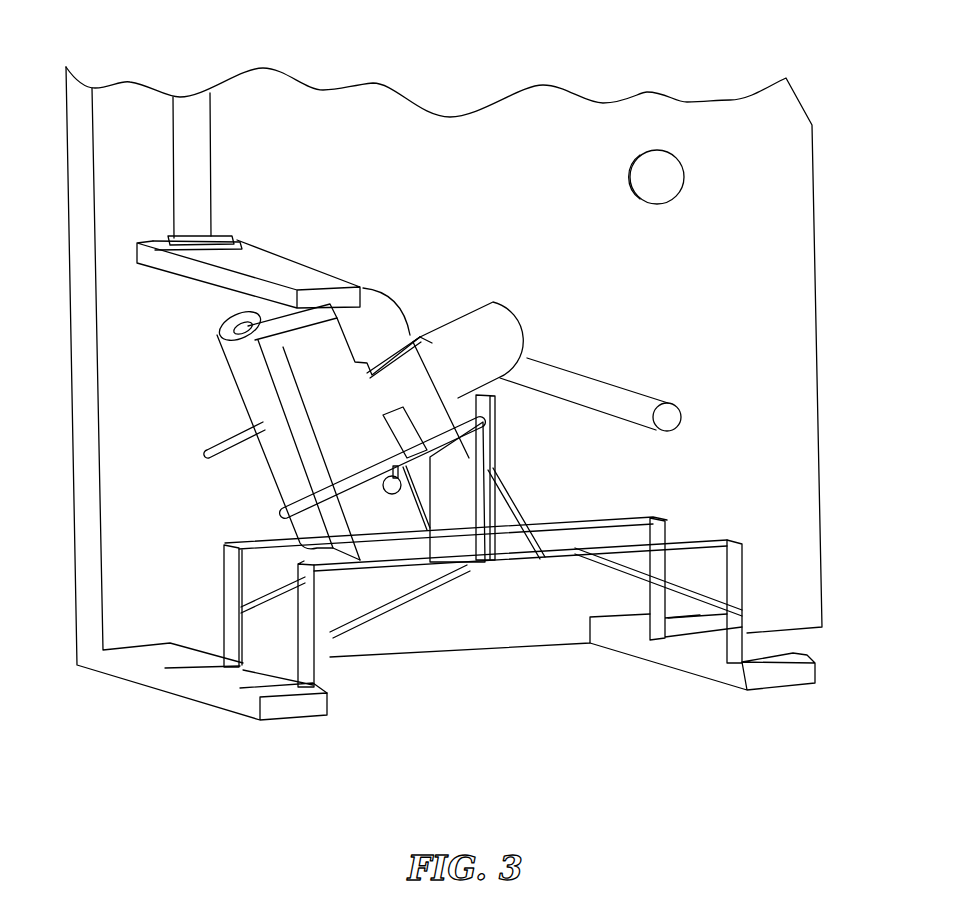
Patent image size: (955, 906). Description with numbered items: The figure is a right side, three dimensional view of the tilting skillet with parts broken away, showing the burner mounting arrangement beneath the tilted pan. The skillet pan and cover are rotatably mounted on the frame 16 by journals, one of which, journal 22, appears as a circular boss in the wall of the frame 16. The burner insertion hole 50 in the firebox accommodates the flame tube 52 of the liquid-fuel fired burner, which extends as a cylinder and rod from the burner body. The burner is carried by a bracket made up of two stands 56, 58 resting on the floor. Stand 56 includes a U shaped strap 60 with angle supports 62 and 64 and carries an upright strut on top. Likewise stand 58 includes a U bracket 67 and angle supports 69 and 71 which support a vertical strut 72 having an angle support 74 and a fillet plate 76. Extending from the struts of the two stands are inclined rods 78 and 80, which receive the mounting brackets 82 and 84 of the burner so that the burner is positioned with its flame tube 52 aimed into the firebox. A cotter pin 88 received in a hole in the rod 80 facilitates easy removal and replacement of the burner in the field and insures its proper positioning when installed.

The frame 16 is at (802, 95).
The journal 22 is at (662, 177).
The burner insertion hole 50 is at (451, 290).
The flame tube 52 is at (480, 350).
The stand 56 is at (483, 552).
The stand 58 is at (737, 538).
The U shaped strap 60 is at (222, 585).
The angle support 62 is at (282, 580).
The angle support 64 is at (575, 526).
The U bracket 67 is at (304, 630).
The angle support 69 is at (385, 608).
The angle support 71 is at (620, 574).
The vertical strut 72 is at (497, 440).
The angle support 74 is at (520, 478).
The fillet plate 76 is at (472, 548).
The inclined rod 78 is at (207, 448).
The inclined rod 80 is at (283, 512).
The mounting bracket 82 is at (412, 478).
The mounting bracket 84 is at (398, 410).
The cotter pin 88 is at (402, 490).